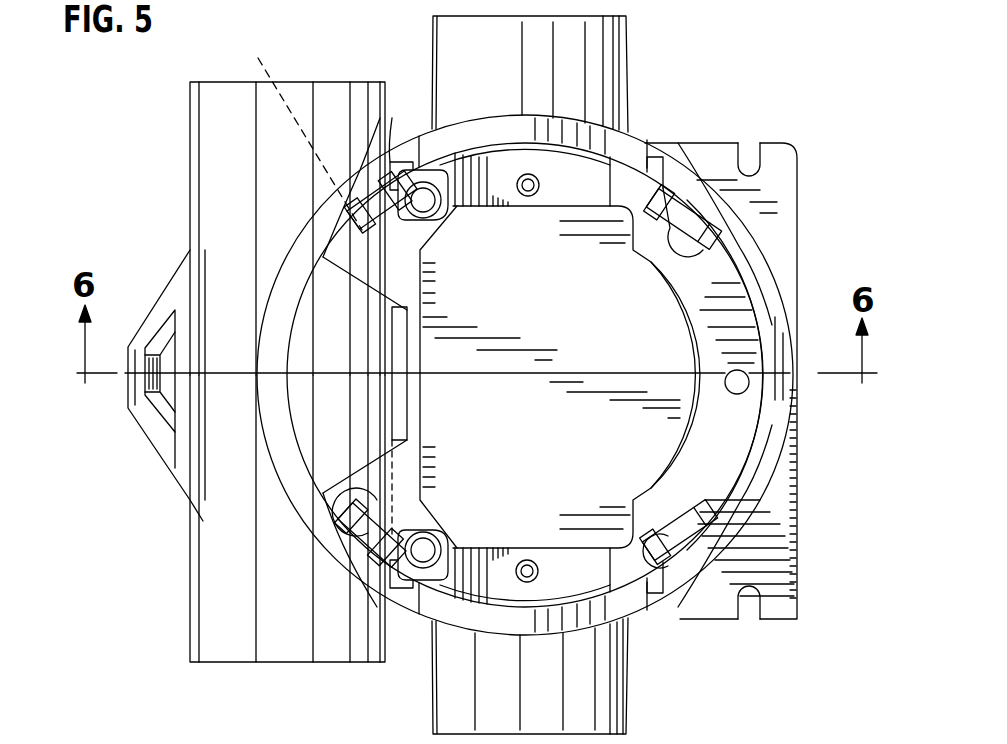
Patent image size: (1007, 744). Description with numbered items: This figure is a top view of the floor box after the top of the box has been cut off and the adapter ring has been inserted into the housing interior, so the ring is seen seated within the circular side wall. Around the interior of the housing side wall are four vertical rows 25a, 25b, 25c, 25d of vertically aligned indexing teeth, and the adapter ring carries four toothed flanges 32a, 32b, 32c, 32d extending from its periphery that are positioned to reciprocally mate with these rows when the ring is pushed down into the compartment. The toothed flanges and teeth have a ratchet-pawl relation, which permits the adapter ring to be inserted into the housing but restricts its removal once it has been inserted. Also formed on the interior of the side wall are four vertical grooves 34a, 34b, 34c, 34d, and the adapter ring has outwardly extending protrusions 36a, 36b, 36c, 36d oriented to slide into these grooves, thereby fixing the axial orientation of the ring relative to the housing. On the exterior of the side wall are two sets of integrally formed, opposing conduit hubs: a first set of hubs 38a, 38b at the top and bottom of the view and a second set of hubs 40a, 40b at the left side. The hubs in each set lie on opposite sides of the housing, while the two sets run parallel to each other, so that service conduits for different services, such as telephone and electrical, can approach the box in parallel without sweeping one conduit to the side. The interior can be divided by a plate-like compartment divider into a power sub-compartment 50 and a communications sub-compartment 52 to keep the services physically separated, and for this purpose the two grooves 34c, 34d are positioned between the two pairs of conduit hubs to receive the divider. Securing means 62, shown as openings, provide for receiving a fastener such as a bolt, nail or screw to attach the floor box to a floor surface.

The row of indexing teeth 25a is at (683, 165).
The row of indexing teeth 25b is at (760, 480).
The row of indexing teeth 25c is at (330, 553).
The row of indexing teeth 25d is at (305, 143).
The toothed flange 32a is at (712, 245).
The toothed flange 32b is at (705, 555).
The toothed flange 32c is at (323, 493).
The toothed flange 32d is at (352, 185).
The vertical groove 34a is at (657, 155).
The vertical groove 34b is at (655, 605).
The vertical groove 34c is at (402, 592).
The vertical groove 34d is at (428, 138).
The protrusion 36a is at (683, 145).
The protrusion 36b is at (690, 583).
The protrusion 36c is at (405, 600).
The protrusion 36d is at (410, 137).
The conduit hub 38a is at (610, 62).
The conduit hub 38b is at (613, 691).
The conduit hub 40a is at (207, 140).
The conduit hub 40b is at (220, 609).
The power sub-compartment 50 is at (670, 447).
The communications sub-compartment 52 is at (382, 412).
The securing means 62 is at (163, 403).